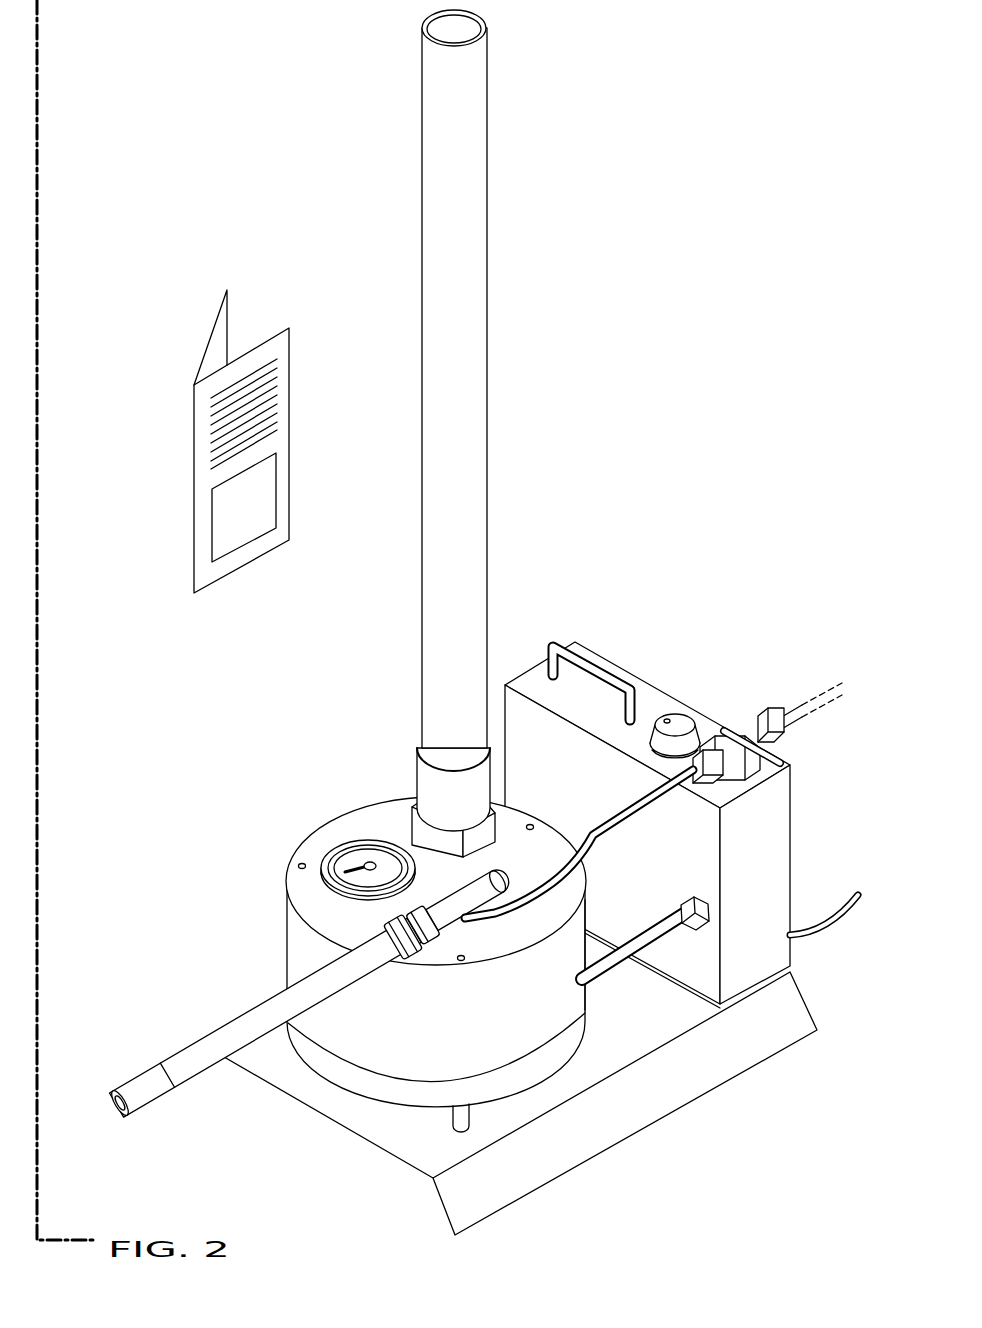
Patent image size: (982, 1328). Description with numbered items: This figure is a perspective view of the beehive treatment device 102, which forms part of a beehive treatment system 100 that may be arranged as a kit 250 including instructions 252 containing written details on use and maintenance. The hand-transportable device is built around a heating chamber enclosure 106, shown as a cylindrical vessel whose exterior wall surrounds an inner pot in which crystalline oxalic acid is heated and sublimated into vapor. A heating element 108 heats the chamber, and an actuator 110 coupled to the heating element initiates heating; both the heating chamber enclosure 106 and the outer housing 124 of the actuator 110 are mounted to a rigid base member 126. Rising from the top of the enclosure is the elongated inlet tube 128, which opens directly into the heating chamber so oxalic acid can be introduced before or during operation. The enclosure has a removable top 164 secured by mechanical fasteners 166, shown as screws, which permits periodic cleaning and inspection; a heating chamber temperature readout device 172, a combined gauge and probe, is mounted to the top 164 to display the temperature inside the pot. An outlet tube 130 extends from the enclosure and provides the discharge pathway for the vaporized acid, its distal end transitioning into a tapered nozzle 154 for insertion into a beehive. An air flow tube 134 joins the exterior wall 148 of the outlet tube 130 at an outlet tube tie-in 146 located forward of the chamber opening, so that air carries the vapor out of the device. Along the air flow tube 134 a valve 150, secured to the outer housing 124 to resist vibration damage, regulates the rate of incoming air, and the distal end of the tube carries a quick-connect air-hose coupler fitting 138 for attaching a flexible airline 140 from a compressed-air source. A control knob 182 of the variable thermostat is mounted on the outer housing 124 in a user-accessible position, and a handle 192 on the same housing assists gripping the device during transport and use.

The beehive treatment system 100 is at (292, 241).
The beehive treatment device 102 is at (267, 720).
The heating chamber enclosure 106 is at (406, 1006).
The heating element 108 is at (663, 937).
The actuator 110 is at (681, 792).
The outer housing 124 is at (778, 822).
The rigid base member 126 is at (777, 1000).
The inlet tube 128 is at (488, 570).
The outlet tube 130 is at (275, 1035).
The air flow tube 134 is at (588, 846).
The air-hose coupler fitting 138 is at (792, 738).
The flexible airline 140 is at (812, 698).
The outlet tube tie-in 146 is at (585, 910).
The exterior wall of the outlet tube 148 is at (505, 878).
The valve 150 is at (772, 766).
The nozzle 154 is at (145, 1110).
The removable top 164 is at (355, 818).
The mechanical fasteners 166 is at (298, 863).
The heating chamber temperature readout device 172 is at (333, 848).
The control knob 182 is at (690, 722).
The handle 192 is at (605, 657).
The kit 250 is at (146, 302).
The instructions 252 is at (194, 430).